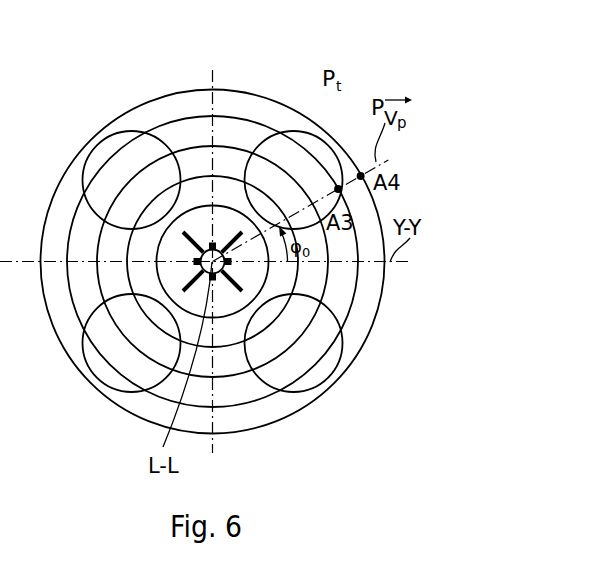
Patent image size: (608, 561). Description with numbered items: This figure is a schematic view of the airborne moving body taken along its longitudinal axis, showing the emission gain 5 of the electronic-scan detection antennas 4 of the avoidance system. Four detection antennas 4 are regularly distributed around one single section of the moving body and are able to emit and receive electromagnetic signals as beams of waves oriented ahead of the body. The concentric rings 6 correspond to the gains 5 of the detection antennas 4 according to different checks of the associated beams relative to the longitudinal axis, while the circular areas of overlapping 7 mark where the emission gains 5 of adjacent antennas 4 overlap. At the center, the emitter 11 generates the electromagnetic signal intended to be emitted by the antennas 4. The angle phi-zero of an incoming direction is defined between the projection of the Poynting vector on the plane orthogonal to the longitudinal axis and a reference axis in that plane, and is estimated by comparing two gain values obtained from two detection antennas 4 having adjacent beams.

The detection antenna 4 is at (196, 263).
The emission gain 5 is at (200, 168).
The concentric ring 6 is at (228, 130).
The area of overlapping 7 is at (107, 142).
The emitter 11 is at (224, 263).